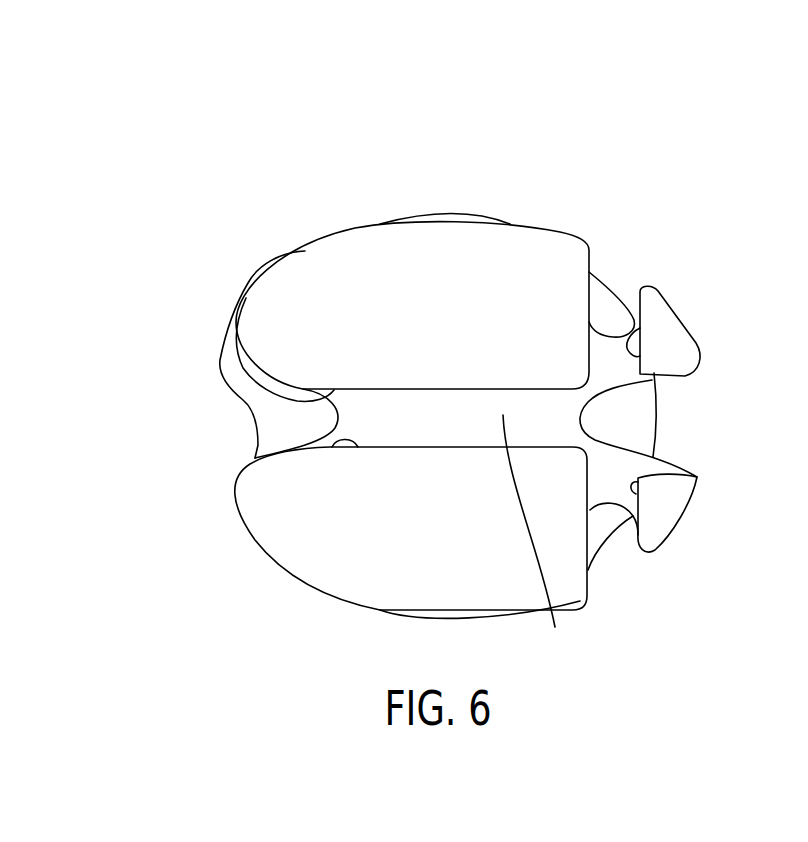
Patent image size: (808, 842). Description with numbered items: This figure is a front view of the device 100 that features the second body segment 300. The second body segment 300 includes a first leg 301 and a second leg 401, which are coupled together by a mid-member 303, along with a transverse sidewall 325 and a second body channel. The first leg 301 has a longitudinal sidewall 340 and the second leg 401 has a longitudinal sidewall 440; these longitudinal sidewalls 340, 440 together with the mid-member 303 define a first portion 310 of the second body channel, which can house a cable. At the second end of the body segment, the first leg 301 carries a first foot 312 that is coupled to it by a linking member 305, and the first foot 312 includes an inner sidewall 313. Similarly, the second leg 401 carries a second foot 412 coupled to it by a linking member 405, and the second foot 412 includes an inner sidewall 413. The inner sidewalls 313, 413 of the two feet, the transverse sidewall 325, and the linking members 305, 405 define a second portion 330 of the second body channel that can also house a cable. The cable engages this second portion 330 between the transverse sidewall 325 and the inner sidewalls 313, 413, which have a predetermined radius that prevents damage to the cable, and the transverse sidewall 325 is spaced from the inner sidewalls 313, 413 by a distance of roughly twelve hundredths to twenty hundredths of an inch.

The device 100 is at (268, 156).
The second body segment 300 is at (172, 381).
The first leg 301 is at (358, 242).
The mid-member 303 is at (535, 534).
The linking member 305 is at (612, 348).
The first portion of the second body channel 310 is at (227, 446).
The first foot 312 is at (666, 300).
The inner sidewall 313 is at (642, 334).
The transverse sidewall 325 is at (589, 373).
The second portion of the second body channel 330 is at (611, 228).
The longitudinal sidewall 340 is at (220, 350).
The second leg 401 is at (342, 577).
The linking member 405 is at (607, 477).
The second foot 412 is at (668, 537).
The inner sidewall 413 is at (697, 477).
The longitudinal sidewall 440 is at (328, 444).